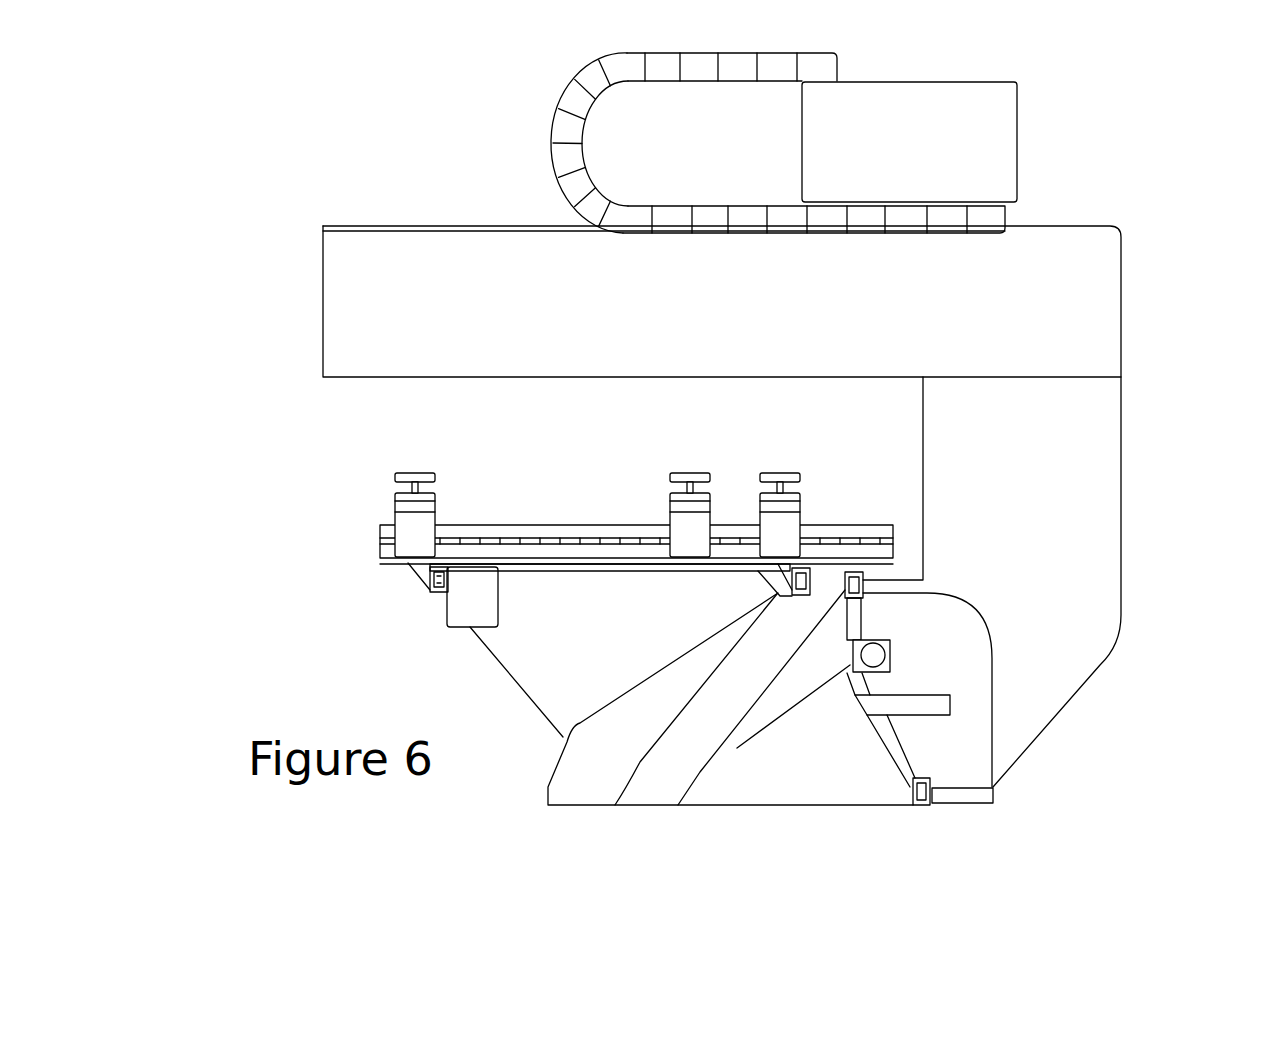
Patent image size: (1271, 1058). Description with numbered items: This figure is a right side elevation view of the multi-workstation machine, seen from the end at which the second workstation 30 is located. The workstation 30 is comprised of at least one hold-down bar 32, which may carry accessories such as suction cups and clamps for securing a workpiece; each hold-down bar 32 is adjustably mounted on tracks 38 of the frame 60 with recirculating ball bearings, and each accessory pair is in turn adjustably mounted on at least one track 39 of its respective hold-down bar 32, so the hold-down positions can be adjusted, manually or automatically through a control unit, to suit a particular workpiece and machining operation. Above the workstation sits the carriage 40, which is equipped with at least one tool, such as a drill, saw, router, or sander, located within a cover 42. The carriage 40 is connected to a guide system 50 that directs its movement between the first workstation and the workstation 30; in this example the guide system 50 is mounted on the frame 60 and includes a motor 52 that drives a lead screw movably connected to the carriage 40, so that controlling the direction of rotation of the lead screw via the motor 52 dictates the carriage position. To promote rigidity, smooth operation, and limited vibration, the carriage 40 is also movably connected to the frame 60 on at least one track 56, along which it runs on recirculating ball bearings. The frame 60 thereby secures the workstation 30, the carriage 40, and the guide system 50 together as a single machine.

The second workstation 30 is at (413, 462).
The hold-down bar 32 is at (395, 509).
The tracks 38 is at (440, 578).
The track 39 is at (548, 525).
The carriage 40 is at (470, 218).
The cover 42 is at (322, 290).
The guide system 50 is at (893, 652).
The motor 52 is at (678, 805).
The track 56 is at (618, 803).
The frame 60 is at (548, 800).